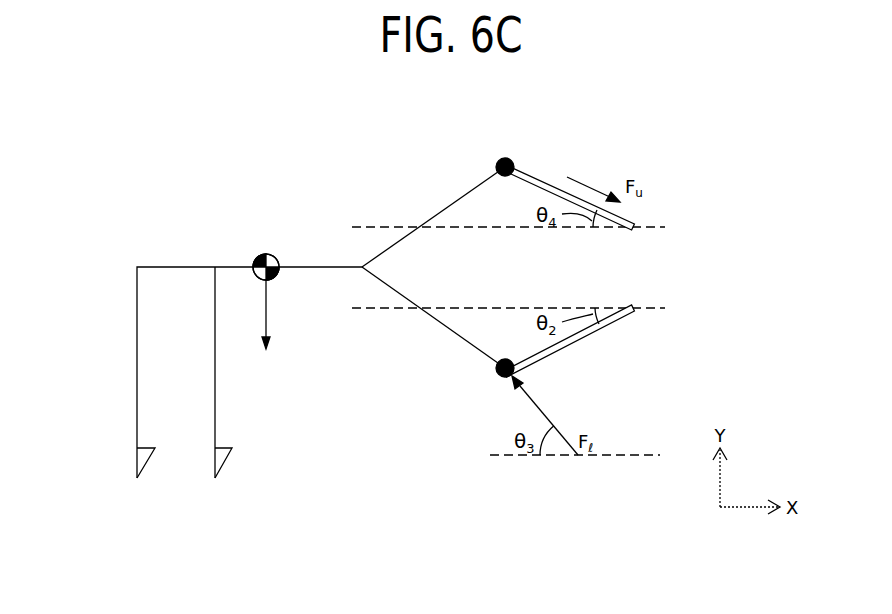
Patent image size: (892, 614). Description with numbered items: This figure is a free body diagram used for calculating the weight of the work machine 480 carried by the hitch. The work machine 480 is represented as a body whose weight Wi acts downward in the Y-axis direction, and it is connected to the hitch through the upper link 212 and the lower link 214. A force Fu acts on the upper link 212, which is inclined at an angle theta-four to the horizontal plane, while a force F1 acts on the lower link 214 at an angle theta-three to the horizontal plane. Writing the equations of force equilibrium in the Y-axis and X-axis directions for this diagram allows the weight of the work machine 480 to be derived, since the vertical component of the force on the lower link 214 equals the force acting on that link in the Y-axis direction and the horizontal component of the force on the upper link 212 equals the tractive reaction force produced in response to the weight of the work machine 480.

The work machine 480 is at (315, 266).
The upper link 212 is at (530, 178).
The lower link 214 is at (587, 332).